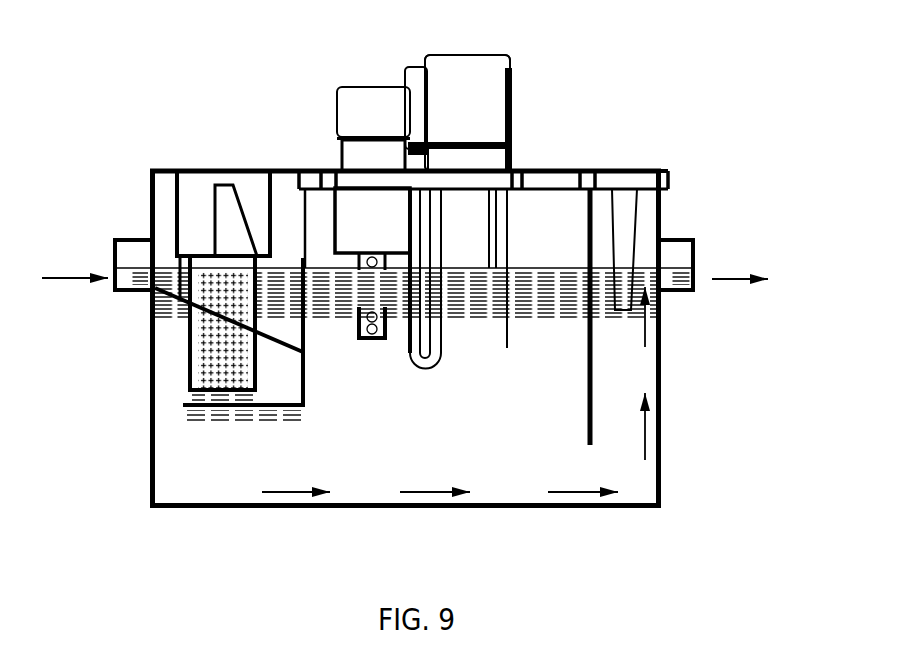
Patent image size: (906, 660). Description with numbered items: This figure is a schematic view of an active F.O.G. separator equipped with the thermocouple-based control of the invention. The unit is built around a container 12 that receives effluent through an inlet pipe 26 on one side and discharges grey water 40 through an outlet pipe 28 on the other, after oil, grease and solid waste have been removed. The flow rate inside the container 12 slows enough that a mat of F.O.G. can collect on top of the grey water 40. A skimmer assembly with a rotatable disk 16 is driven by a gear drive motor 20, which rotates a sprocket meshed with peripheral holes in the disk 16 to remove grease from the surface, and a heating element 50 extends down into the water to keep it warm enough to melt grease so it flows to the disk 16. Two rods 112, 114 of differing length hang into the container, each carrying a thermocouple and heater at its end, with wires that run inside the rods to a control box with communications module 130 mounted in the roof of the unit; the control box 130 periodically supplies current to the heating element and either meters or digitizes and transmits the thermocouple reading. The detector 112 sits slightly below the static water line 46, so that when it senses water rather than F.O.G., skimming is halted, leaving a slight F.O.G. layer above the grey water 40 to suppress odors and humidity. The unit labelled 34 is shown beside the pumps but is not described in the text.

The container 12 is at (662, 332).
The rotatable disk 16 is at (378, 338).
The gear drive motor 20 is at (473, 87).
The inlet pipe 26 is at (133, 240).
The outlet pipe 28 is at (685, 240).
The control unit 34 is at (385, 231).
The grey water 40 is at (430, 426).
The static water line 46 is at (538, 268).
The heating element 50 is at (442, 343).
The rod 112 is at (492, 222).
The rod 114 is at (507, 232).
The control box with communications module 130 is at (512, 112).